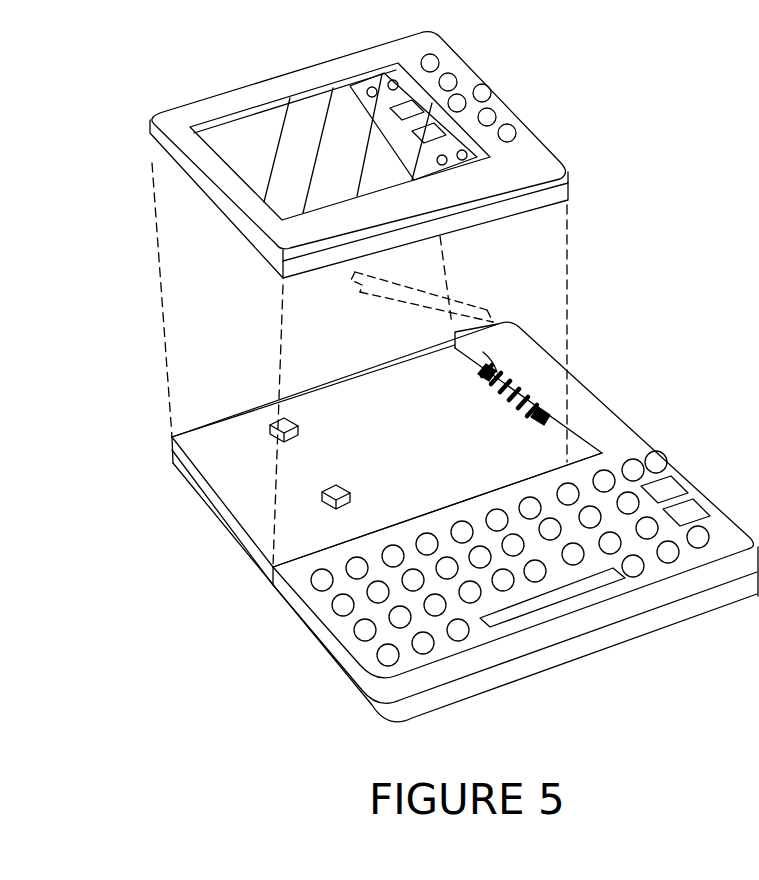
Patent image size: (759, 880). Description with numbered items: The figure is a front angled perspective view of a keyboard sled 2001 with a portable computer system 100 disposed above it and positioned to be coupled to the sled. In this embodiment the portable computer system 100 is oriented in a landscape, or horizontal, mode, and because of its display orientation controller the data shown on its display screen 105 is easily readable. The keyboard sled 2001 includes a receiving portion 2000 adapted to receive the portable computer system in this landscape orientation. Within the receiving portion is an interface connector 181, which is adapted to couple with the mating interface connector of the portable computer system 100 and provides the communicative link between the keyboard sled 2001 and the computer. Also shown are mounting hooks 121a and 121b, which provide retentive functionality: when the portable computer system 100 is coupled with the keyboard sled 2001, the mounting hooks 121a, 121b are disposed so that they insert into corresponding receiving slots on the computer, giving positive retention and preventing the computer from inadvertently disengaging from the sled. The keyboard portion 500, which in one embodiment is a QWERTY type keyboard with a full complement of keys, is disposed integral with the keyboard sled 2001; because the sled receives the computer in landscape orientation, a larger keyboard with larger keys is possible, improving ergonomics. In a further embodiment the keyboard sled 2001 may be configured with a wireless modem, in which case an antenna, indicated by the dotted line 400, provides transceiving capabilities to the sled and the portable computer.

The portable computer system 100 is at (533, 148).
The display screen 105 is at (297, 117).
The antenna 400 is at (467, 294).
The interface connector 181 is at (525, 390).
The keyboard portion 500 is at (351, 638).
The receiving portion 2000 is at (377, 457).
The keyboard sled 2001 is at (623, 603).
The mounting hook 121a is at (268, 430).
The mounting hook 121b is at (321, 500).